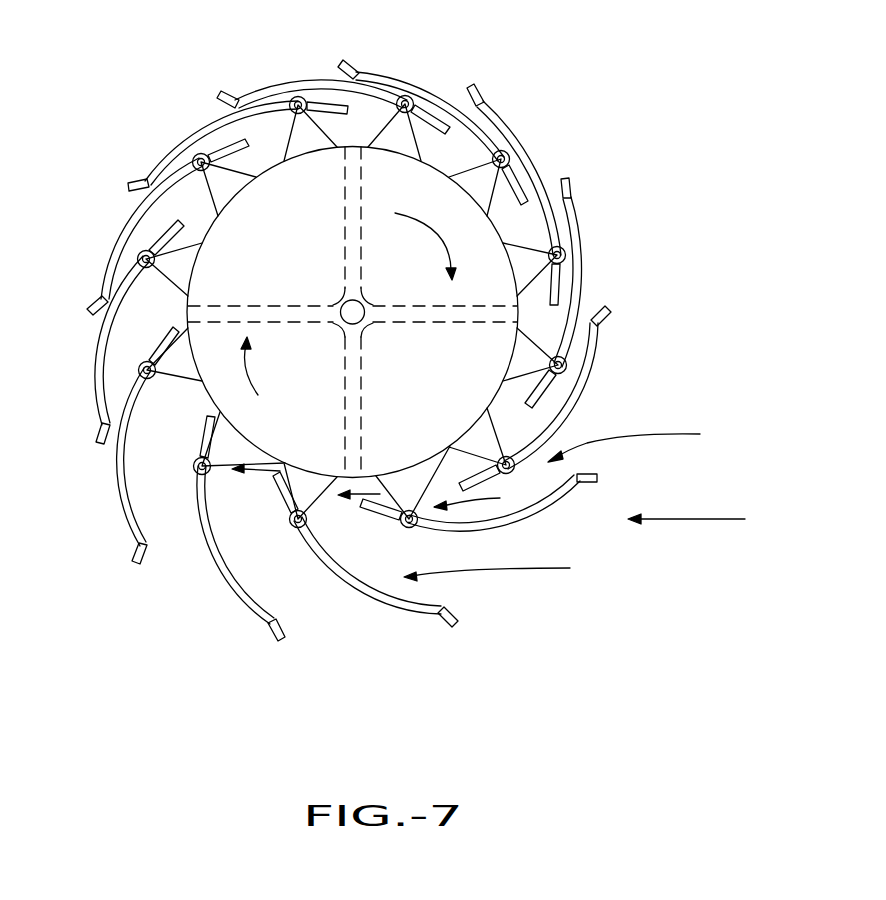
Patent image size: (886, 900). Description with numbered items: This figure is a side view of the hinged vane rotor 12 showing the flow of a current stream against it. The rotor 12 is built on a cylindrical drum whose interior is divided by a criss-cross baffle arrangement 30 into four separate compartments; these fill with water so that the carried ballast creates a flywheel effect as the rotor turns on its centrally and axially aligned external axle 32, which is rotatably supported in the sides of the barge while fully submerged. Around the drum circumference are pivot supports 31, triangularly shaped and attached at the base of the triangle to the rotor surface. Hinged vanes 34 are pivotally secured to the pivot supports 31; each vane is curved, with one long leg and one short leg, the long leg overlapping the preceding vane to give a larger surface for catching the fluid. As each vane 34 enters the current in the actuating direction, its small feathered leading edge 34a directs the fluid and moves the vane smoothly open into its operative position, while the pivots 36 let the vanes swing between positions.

The hinged vane rotor 12 is at (192, 217).
The criss-cross baffle arrangement 30 is at (345, 263).
The pivot supports 31 is at (466, 182).
The external axle 32 is at (360, 318).
The hinged vanes 34 is at (276, 80).
The feathered leading edge 34a is at (278, 645).
The pivot 36 is at (507, 150).